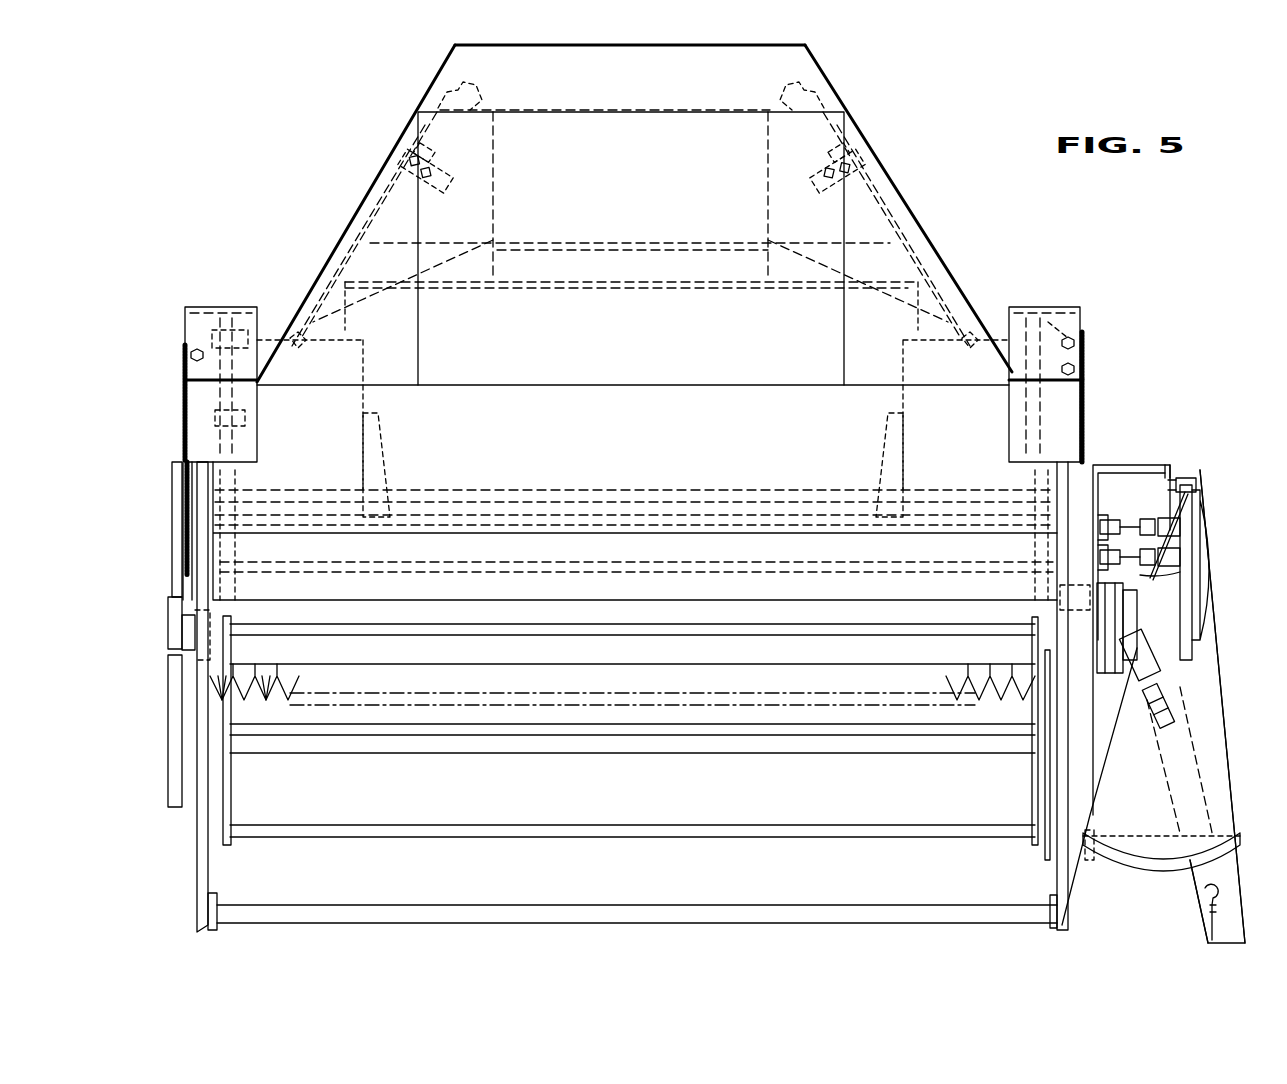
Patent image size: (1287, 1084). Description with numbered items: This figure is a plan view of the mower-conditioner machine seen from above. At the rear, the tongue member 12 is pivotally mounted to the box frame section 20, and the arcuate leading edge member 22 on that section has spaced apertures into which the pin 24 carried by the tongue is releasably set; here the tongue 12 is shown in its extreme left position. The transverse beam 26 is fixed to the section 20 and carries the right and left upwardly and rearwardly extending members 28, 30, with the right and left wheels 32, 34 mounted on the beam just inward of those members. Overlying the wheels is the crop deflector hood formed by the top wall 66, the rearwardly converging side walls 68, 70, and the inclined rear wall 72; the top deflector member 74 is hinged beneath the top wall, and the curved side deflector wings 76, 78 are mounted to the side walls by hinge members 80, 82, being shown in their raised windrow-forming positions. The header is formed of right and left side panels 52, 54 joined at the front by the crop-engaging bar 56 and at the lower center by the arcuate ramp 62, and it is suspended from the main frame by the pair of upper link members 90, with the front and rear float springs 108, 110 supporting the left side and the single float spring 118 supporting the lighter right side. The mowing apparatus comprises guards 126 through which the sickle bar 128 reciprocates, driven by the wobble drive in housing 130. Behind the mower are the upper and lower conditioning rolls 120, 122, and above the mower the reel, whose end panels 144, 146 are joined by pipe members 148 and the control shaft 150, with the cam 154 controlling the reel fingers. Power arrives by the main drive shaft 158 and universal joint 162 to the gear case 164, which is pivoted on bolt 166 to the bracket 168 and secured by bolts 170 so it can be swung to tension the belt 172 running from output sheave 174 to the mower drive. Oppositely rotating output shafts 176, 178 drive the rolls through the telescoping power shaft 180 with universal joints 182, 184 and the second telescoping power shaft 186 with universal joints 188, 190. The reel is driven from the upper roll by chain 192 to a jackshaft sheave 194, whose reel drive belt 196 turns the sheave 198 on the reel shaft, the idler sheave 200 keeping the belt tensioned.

The tongue member 12 is at (1225, 918).
The box frame section 20 is at (1222, 795).
The arcuate leading edge member 22 is at (1130, 868).
The pin 24 is at (1202, 900).
The transverse beam 26 is at (728, 568).
The right upwardly and rearwardly extending member 28 is at (212, 348).
The left upwardly and rearwardly extending member 30 is at (1062, 330).
The right wheel 32 is at (298, 336).
The left wheel 34 is at (972, 336).
The right side panel 52 is at (197, 840).
The left side panel 54 is at (1057, 878).
The transverse crop-engaging bar 56 is at (661, 906).
The transverse arcuate ramp 62 is at (494, 661).
The top wall 66 is at (638, 191).
The right side wall 68 is at (398, 170).
The left side wall 70 is at (857, 170).
The rear wall 72 is at (640, 85).
The top deflector member 74 is at (902, 229).
The right side deflector wing 76 is at (470, 100).
The left side deflector wing 78 is at (795, 100).
The hinge member 80 is at (366, 214).
The hinge member 82 is at (888, 204).
The upper link member 90 is at (227, 293).
The front float spring 108 is at (1085, 396).
The rear float spring 110 is at (1083, 352).
The float spring 118 is at (183, 374).
The upper crop conditioning roll 120 is at (532, 592).
The lower crop conditioning roll 122 is at (637, 572).
The guards 126 is at (278, 700).
The sickle bar 128 is at (233, 700).
The housing 130 is at (1090, 602).
The reel end panel 144 is at (225, 804).
The reel end panel 146 is at (1032, 800).
The transverse pipe members 148 is at (740, 630).
The control shaft 150 is at (896, 754).
The cam 154 is at (1045, 852).
The main longitudinal drive shaft 158 is at (1176, 722).
The universal joint 162 is at (1162, 680).
The gear case 164 is at (1192, 602).
The bolt 166 is at (1196, 486).
The bracket 168 is at (1170, 466).
The bolts 170 is at (1200, 586).
The belt 172 is at (1115, 672).
The output sheave 174 is at (1108, 674).
The gear case output shaft 176 is at (1180, 537).
The gear case output shaft 178 is at (1180, 524).
The telescoping power shaft 180 is at (1158, 527).
The universal joint 182 is at (1180, 564).
The universal joint 184 is at (1106, 522).
The second telescoping power shaft 186 is at (1133, 527).
The universal joint 188 is at (1180, 490).
The universal joint 190 is at (1118, 524).
The chain 192 is at (183, 462).
The sheave 194 is at (172, 480).
The reel drive belt 196 is at (170, 568).
The sheave 198 is at (168, 748).
The idler sheave 200 is at (168, 628).